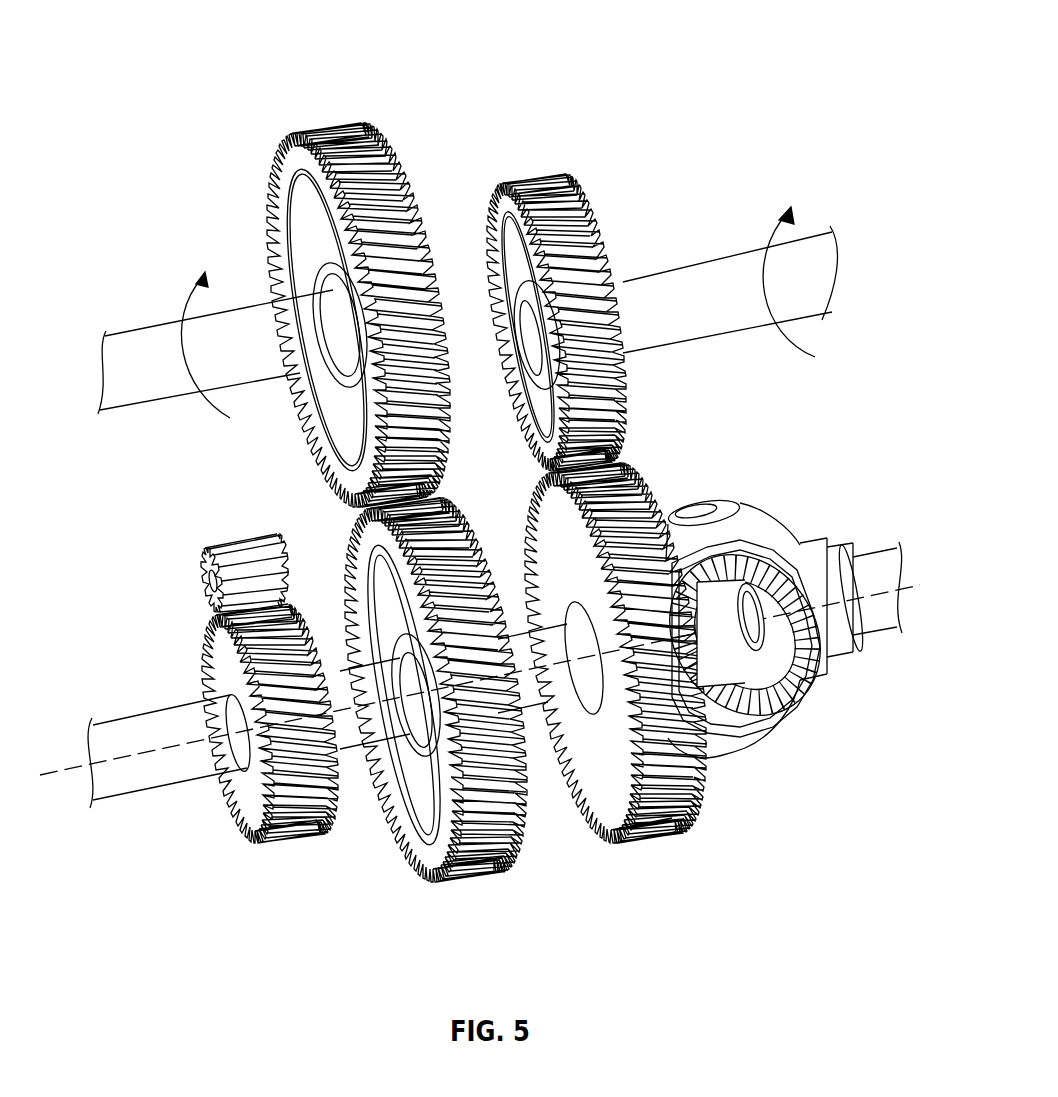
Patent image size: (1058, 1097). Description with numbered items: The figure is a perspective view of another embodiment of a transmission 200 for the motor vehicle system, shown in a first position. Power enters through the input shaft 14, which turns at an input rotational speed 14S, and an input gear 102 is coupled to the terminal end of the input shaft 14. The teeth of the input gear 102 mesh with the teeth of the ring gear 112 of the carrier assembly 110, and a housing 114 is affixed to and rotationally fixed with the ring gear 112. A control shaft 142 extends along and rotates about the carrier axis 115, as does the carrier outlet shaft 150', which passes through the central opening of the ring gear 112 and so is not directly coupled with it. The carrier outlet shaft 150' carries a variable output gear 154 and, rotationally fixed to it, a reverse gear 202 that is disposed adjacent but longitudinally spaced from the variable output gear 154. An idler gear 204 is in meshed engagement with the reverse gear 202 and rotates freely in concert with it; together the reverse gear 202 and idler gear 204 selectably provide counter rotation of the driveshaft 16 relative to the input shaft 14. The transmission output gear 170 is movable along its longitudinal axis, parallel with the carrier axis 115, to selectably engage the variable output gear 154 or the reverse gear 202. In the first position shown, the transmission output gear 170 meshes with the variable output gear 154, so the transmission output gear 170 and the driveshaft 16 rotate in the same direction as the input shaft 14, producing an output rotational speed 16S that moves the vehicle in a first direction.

The transmission 200 is at (140, 46).
The transmission output gear 170 is at (332, 122).
The input gear 102 is at (546, 182).
The input shaft 14 is at (818, 232).
The input rotational speed 14S is at (772, 236).
The driveshaft 16 is at (126, 411).
The output rotational speed 16S is at (198, 289).
The idler gear 204 is at (216, 588).
The reverse gear 202 is at (280, 847).
The carrier outlet shaft 150' is at (321, 716).
The carrier axis 115 is at (63, 768).
The variable output gear 154 is at (462, 888).
The ring gear 112 is at (660, 843).
The carrier assembly 110 is at (622, 912).
The housing 114 is at (767, 524).
The control shaft 142 is at (880, 556).